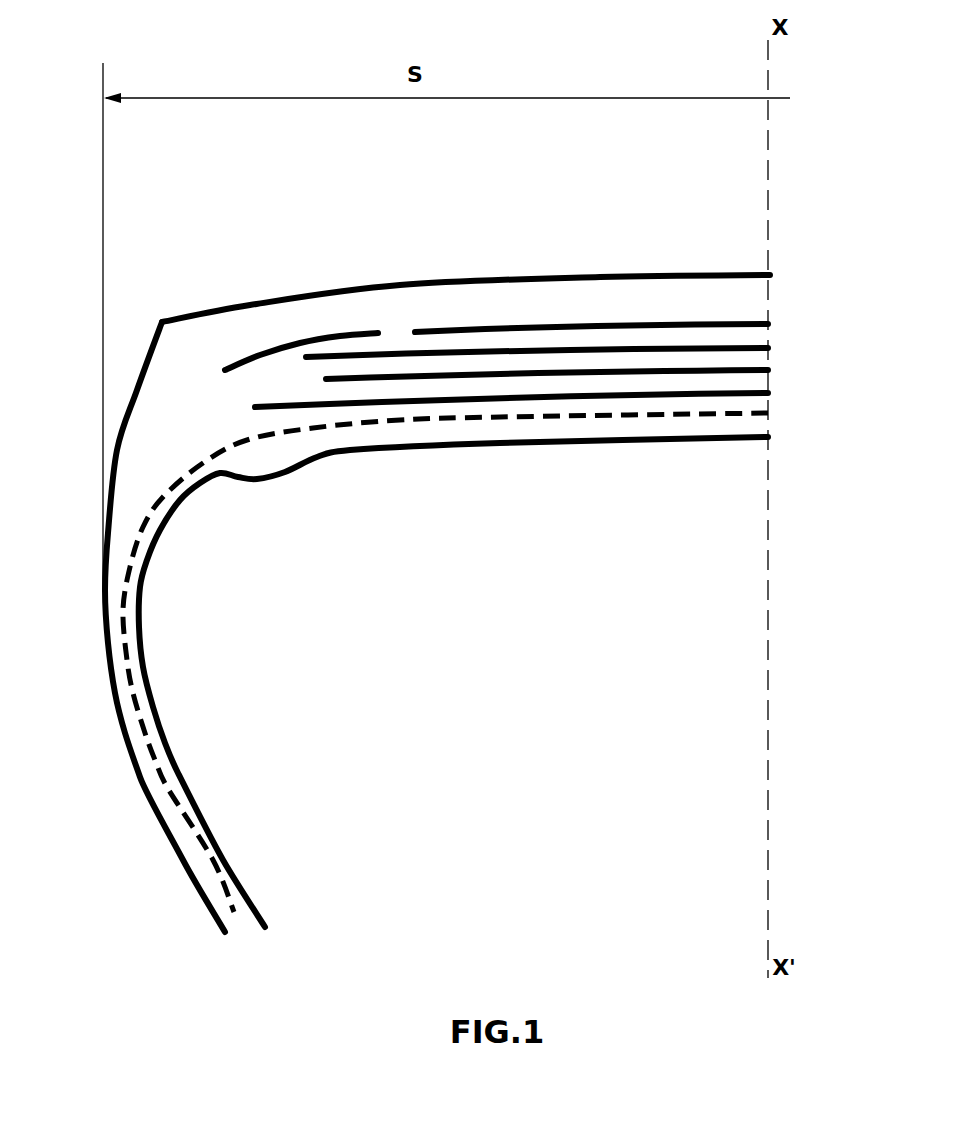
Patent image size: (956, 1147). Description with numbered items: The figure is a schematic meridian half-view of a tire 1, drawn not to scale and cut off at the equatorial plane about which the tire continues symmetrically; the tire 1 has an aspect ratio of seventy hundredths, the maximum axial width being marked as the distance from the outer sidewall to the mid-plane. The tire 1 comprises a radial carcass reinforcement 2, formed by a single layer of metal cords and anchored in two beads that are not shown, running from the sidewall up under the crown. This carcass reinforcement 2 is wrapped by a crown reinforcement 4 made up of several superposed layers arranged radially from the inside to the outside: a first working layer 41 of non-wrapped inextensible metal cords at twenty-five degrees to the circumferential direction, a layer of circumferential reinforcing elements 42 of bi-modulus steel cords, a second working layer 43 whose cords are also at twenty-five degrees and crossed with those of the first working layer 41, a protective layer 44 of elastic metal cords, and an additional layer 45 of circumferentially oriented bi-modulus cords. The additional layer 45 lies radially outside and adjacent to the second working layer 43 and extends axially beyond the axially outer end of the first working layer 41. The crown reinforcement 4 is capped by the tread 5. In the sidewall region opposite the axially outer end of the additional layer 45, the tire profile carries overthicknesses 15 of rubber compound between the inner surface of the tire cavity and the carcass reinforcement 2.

The tire 1 is at (96, 392).
The radial carcass reinforcement 2 is at (134, 545).
The crown reinforcement 4 is at (538, 363).
The tread 5 is at (672, 292).
The overthicknesses 15 is at (263, 504).
The first working layer 41 is at (527, 403).
The layer of circumferential reinforcing elements 42 is at (600, 377).
The second working layer 43 is at (400, 355).
The protective layer 44 is at (553, 328).
The additional layer 45 is at (308, 337).